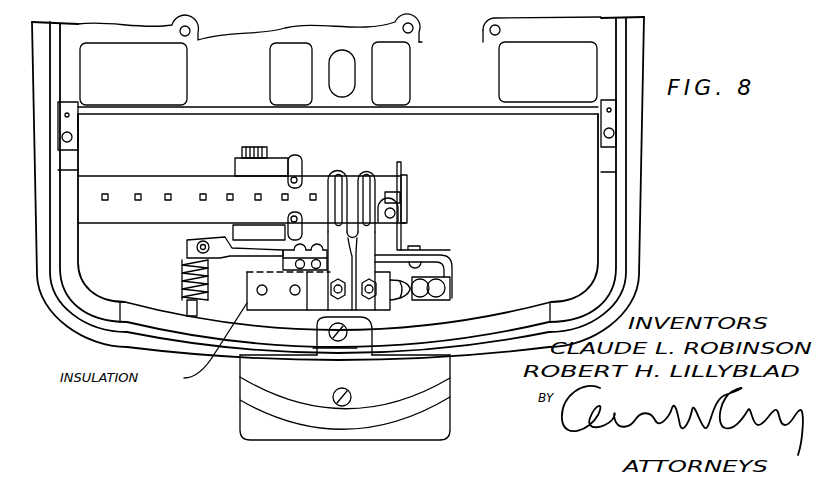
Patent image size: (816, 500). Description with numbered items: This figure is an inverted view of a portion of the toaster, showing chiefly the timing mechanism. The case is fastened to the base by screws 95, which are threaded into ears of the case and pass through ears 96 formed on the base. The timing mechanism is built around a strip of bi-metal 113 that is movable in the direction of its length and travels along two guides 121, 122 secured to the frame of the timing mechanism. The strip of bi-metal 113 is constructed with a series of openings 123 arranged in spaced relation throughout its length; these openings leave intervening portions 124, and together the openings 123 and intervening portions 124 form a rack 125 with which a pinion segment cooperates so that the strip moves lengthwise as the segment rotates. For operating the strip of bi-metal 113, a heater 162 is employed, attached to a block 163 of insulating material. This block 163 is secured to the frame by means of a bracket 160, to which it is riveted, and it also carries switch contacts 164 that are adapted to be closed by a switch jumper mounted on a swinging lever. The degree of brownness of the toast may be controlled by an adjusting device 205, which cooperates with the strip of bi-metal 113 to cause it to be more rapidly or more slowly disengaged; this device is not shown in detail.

The screws 95 is at (337, 342).
The ears 96 is at (370, 348).
The strip of bi-metal 113 is at (153, 180).
The guide 121 is at (402, 200).
The guide 122 is at (298, 165).
The openings 123 is at (135, 192).
The intervening portions 124 is at (217, 192).
The rack 125 is at (115, 212).
The bracket 160 is at (265, 303).
The heater 162 is at (370, 173).
The block of insulating material 163 is at (318, 302).
The switch contacts 164 is at (430, 288).
The adjusting device 205 is at (185, 282).